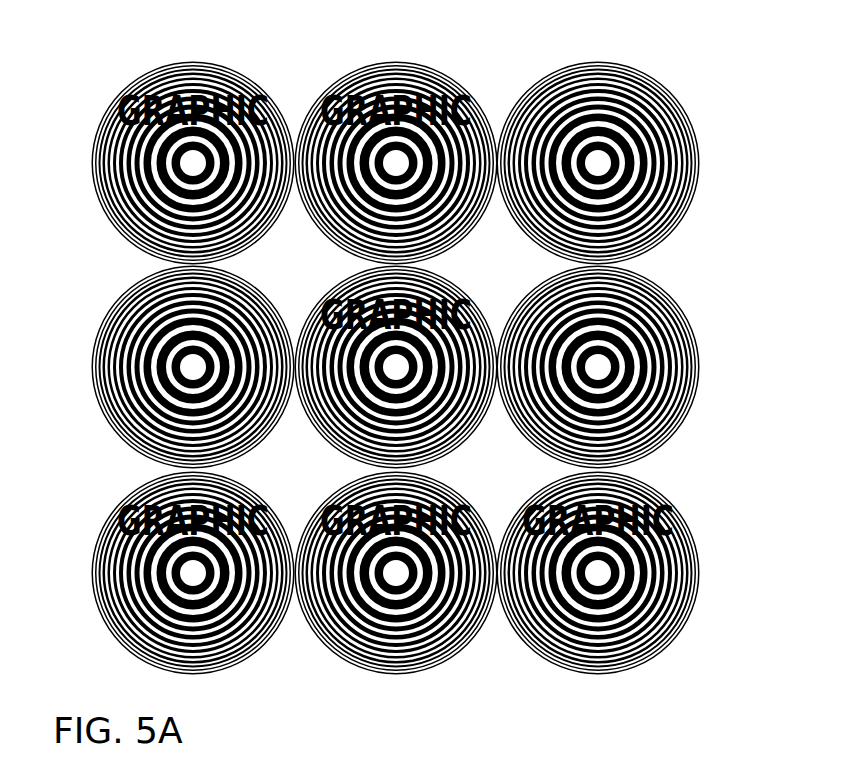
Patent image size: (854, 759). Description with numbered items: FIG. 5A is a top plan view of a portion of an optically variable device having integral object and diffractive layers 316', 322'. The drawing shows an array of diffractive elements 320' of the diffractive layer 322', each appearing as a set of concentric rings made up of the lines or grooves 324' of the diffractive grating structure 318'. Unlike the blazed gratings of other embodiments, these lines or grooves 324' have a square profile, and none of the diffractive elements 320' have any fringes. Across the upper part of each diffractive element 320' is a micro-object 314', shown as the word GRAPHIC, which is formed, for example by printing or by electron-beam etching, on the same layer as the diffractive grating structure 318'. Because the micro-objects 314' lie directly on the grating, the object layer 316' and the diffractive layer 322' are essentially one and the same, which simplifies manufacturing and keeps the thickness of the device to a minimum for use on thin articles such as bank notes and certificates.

The micro-object 314' is at (397, 353).
The object layer 316' is at (161, 301).
The diffractive grating structure 318' is at (397, 368).
The diffractive element 320' is at (618, 250).
The diffractive layer 322' is at (177, 579).
The lines or grooves 324' is at (403, 592).